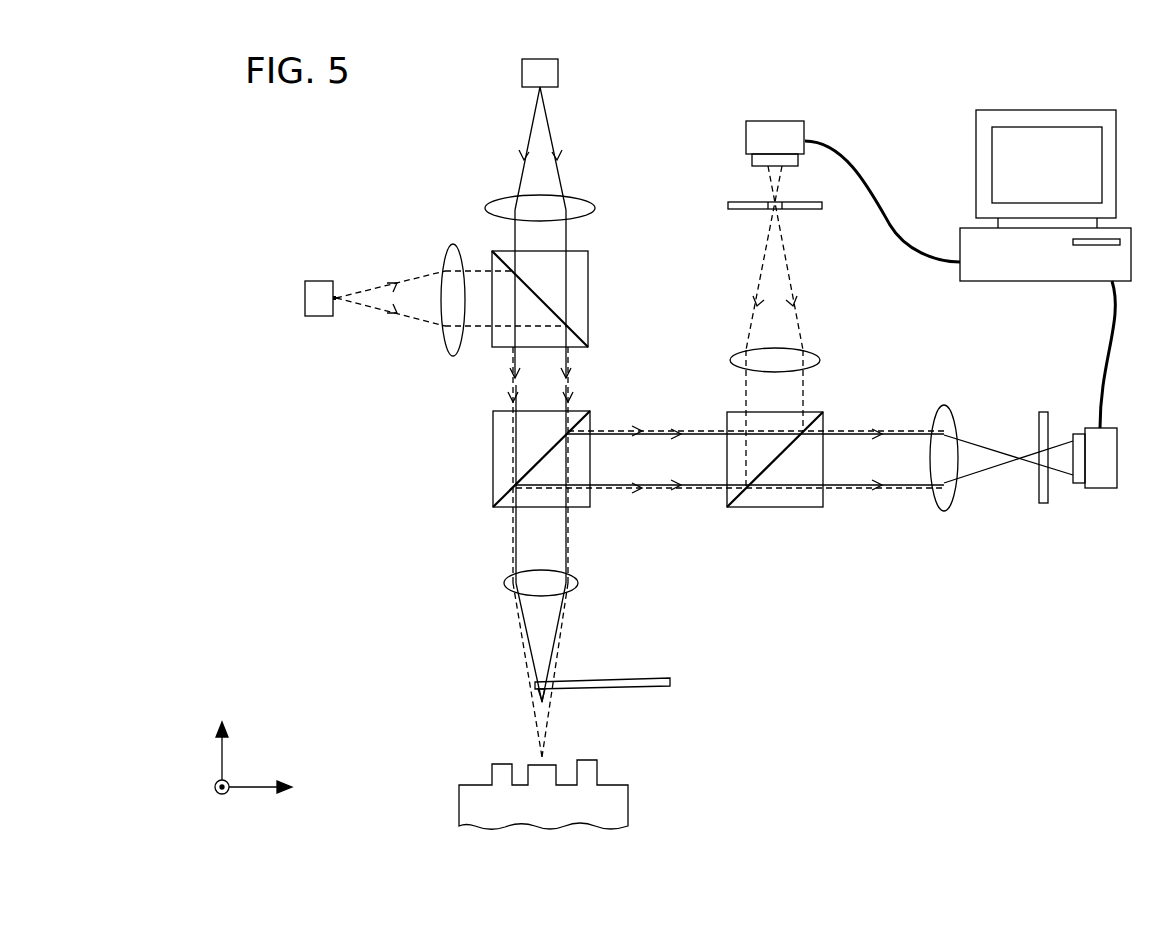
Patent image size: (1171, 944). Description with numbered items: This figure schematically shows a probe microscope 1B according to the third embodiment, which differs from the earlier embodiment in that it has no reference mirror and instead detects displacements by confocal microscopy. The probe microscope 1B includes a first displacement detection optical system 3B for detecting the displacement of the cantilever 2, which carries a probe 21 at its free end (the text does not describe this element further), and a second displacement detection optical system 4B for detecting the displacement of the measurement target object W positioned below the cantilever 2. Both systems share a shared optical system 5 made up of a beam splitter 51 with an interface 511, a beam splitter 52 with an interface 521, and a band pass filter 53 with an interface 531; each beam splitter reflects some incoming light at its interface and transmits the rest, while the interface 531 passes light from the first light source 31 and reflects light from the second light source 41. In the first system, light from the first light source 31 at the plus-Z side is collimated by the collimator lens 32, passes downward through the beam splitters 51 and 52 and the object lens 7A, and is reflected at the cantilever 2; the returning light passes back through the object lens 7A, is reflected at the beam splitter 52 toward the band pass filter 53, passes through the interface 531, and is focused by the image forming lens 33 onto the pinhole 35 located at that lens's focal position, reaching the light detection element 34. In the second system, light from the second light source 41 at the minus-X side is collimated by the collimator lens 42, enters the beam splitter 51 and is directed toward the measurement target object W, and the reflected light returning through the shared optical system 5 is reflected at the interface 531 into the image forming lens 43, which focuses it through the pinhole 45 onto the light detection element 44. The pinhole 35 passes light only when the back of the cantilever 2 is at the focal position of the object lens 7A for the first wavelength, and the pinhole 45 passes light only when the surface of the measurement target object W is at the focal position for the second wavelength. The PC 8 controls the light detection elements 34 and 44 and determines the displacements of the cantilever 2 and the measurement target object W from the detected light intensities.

The probe microscope 1B is at (901, 110).
The cantilever 2 is at (616, 680).
The probe tip 21 is at (538, 693).
The first displacement detection optical system 3B is at (620, 100).
The first light source 31 is at (558, 72).
The collimator lens 32 is at (585, 207).
The image forming lens 33 is at (945, 511).
The light detection element 34 is at (1101, 488).
The pinhole 35 is at (1042, 504).
The second displacement detection optical system 4B is at (340, 183).
The second light source 41 is at (322, 281).
The collimator lens 42 is at (451, 250).
The image forming lens 43 is at (812, 352).
The light detection element 44 is at (806, 148).
The pinhole 45 is at (806, 209).
The shared optical system 5 is at (708, 312).
The beam splitter 51 is at (582, 297).
The interface 511 is at (500, 258).
The beam splitter 52 is at (593, 426).
The interface 521 is at (500, 488).
The band pass filter 53 is at (727, 415).
The interface 531 is at (745, 500).
The object lens 7A is at (572, 584).
The PC 8 is at (1003, 281).
The measurement target object W is at (618, 806).